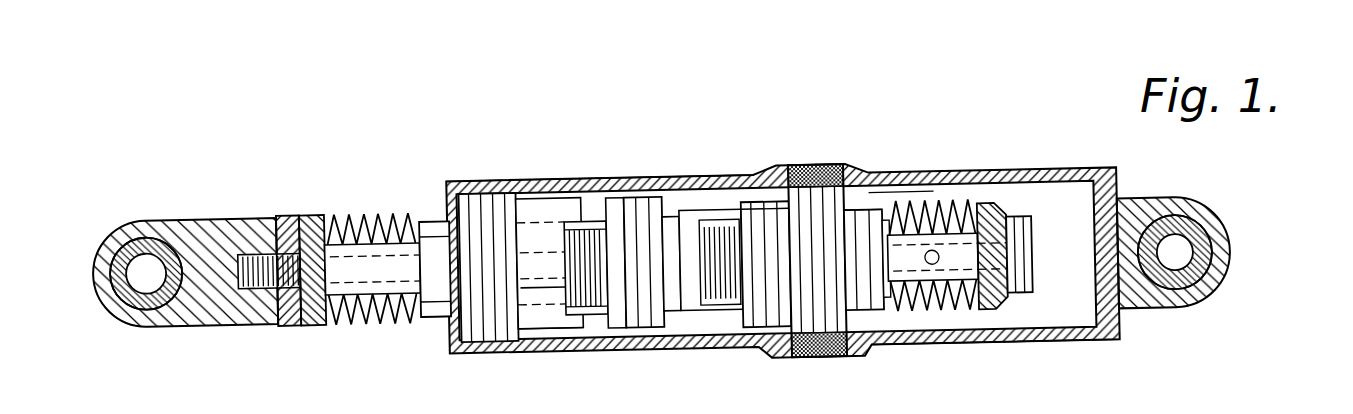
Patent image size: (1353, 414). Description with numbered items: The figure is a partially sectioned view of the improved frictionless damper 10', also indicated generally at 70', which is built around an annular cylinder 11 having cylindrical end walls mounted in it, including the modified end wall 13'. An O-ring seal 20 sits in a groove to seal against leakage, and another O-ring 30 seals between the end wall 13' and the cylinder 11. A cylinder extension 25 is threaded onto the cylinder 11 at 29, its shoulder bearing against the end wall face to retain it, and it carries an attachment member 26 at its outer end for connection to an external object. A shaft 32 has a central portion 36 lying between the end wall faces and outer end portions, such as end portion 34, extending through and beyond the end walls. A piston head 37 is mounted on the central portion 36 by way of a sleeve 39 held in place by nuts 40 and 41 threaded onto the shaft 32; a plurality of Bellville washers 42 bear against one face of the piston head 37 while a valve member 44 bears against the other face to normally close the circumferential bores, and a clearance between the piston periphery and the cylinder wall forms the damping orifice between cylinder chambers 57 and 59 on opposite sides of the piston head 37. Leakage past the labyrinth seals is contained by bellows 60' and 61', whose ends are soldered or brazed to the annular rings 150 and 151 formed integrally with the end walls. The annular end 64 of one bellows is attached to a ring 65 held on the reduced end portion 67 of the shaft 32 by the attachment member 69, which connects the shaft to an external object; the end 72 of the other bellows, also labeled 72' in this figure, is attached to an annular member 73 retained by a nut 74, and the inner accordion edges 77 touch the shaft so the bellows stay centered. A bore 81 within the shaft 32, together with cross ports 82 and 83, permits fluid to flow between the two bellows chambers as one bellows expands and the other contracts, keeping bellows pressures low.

The frictionless damper 10' is at (1105, 376).
The damper 70' is at (500, 136).
The annular cylinder 11 is at (733, 175).
The end wall 13' is at (815, 147).
The O-ring seal 20 is at (478, 200).
The cylinder extension 25 is at (967, 172).
The attachment member 26 is at (1215, 215).
The threaded connection 29 is at (818, 357).
The O-ring 30 is at (828, 170).
The shaft 32 is at (535, 240).
The outer end portion 34 is at (895, 302).
The central portion 36 is at (768, 213).
The piston head 37 is at (647, 330).
The sleeve 39 is at (698, 330).
The nut 40 is at (583, 215).
The nut 41 is at (737, 330).
The Bellville washers 42 is at (680, 213).
The valve member 44 is at (617, 200).
The cylinder chamber 57 is at (542, 330).
The cylinder chamber 59 is at (765, 300).
The bellows 60' is at (372, 246).
The bellows 61' is at (906, 160).
The annular end 64 is at (322, 216).
The ring 65 is at (310, 216).
The reduced end portion 67 is at (272, 222).
The attachment member 69 is at (165, 322).
The end of bellows 72 is at (952, 297).
The piston ring 72' is at (507, 235).
The annular member 73 is at (1000, 315).
The nut 74 is at (1020, 290).
The inner accordion edges 77 is at (448, 332).
The bore 81 is at (560, 285).
The cross port 82 is at (368, 318).
The cross port 83 is at (923, 300).
The annular ring 150 is at (457, 305).
The annular ring 151 is at (860, 210).